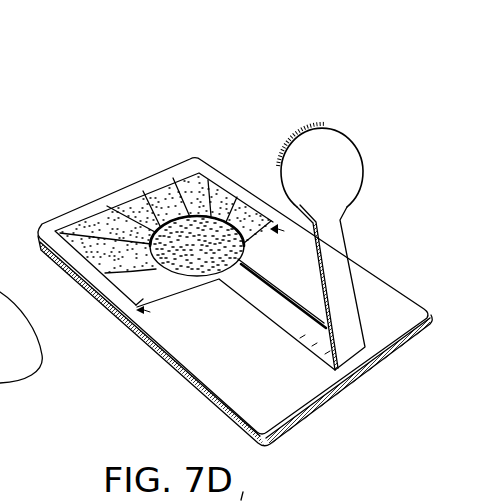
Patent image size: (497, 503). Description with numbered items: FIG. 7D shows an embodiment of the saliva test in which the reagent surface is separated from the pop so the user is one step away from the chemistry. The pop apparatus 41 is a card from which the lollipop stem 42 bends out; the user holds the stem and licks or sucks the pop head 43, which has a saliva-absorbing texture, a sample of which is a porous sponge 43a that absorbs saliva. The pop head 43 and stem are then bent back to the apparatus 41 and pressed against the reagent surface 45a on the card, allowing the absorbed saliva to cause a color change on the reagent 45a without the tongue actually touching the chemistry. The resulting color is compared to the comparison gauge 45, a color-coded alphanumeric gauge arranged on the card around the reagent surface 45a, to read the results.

The pop apparatus 41 is at (179, 374).
The lollipop stem 42 is at (328, 257).
The pop head 43 is at (337, 157).
The sponge 43a is at (290, 133).
The comparison gauge 45 is at (82, 233).
The reagent surface 45a is at (196, 247).